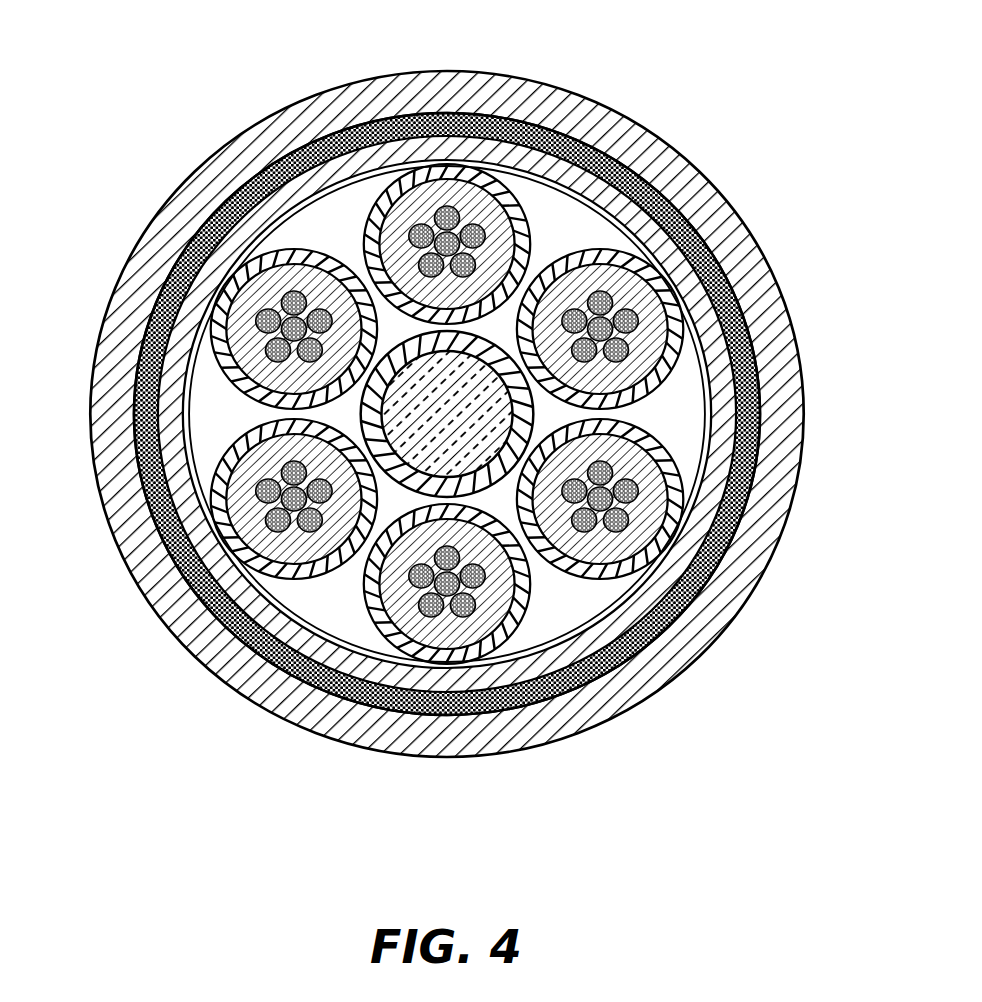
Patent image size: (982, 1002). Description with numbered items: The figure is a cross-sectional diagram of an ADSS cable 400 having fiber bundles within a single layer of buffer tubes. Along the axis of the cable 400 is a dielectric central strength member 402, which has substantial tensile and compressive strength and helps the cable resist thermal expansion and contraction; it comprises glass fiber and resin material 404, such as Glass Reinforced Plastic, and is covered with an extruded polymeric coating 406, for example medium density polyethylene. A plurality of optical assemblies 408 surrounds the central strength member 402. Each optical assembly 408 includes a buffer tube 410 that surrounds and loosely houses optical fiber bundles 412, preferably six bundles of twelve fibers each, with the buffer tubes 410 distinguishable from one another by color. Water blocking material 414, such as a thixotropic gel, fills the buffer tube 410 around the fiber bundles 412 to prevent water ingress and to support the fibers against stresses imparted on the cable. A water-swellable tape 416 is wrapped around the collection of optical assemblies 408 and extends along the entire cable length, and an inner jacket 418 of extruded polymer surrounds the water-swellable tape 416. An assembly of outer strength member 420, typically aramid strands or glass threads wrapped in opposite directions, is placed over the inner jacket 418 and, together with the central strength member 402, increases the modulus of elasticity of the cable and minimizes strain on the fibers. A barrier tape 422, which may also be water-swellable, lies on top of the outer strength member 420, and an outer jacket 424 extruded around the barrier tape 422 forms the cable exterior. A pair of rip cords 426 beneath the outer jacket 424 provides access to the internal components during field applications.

The ADSS cable 400 is at (458, 414).
The central strength member 402 is at (345, 410).
The glass fiber and resin material 404 is at (485, 360).
The extruded polymeric coating 406 is at (550, 399).
The optical assemblies 408 is at (375, 228).
The buffer tube 410 is at (595, 112).
The optical fiber bundles 412 is at (430, 215).
The water blocking material 414 is at (468, 190).
The water-swellable tape 416 is at (190, 317).
The inner jacket 418 is at (160, 562).
The outer strength member 420 is at (703, 220).
The barrier tape 422 is at (757, 287).
The outer jacket 424 is at (737, 590).
The rip cords 426 is at (570, 697).